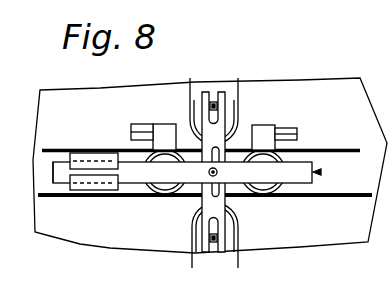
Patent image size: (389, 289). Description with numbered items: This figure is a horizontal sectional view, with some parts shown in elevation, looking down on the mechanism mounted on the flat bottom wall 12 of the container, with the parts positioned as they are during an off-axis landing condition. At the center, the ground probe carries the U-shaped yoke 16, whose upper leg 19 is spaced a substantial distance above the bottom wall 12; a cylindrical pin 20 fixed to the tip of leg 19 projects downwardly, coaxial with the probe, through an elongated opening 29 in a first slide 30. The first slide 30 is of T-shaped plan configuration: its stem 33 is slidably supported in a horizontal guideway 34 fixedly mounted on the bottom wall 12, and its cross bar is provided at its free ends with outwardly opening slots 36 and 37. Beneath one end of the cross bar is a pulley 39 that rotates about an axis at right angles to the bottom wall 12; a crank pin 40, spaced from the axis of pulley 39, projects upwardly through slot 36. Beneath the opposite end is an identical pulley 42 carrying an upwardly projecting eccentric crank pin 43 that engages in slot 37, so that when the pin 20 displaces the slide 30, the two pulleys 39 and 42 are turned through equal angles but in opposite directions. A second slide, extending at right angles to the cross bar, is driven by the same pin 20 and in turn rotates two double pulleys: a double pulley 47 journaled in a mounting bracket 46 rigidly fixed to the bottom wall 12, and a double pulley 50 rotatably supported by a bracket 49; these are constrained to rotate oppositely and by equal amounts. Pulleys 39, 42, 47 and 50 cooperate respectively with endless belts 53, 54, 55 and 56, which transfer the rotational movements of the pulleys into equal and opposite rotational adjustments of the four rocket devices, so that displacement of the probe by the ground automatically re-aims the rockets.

The bottom wall 12 is at (110, 249).
The U-shaped yoke 16 is at (320, 172).
The leg 19 is at (300, 183).
The cylindrical pin 20 is at (205, 184).
The elongated opening 29 is at (228, 193).
The first slide 30 is at (59, 154).
The stem 33 is at (61, 178).
The horizontal guideway 34 is at (95, 189).
The slot 36 is at (226, 96).
The slot 37 is at (214, 253).
The pulley 39 is at (230, 125).
The crank pin 40 is at (210, 105).
The pulley 42 is at (195, 228).
The eccentric crank pin 43 is at (218, 238).
The mounting bracket 46 is at (135, 123).
The double pulley 47 is at (165, 155).
The bracket 49 is at (298, 134).
The double pulley 50 is at (261, 186).
The endless belt 53 is at (236, 80).
The endless belt 54 is at (191, 256).
The endless belt 55 is at (96, 147).
The endless belt 56 is at (342, 146).